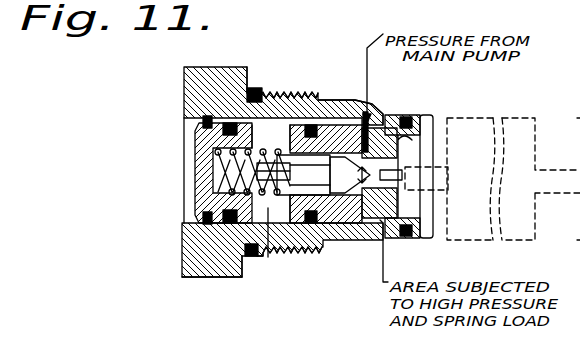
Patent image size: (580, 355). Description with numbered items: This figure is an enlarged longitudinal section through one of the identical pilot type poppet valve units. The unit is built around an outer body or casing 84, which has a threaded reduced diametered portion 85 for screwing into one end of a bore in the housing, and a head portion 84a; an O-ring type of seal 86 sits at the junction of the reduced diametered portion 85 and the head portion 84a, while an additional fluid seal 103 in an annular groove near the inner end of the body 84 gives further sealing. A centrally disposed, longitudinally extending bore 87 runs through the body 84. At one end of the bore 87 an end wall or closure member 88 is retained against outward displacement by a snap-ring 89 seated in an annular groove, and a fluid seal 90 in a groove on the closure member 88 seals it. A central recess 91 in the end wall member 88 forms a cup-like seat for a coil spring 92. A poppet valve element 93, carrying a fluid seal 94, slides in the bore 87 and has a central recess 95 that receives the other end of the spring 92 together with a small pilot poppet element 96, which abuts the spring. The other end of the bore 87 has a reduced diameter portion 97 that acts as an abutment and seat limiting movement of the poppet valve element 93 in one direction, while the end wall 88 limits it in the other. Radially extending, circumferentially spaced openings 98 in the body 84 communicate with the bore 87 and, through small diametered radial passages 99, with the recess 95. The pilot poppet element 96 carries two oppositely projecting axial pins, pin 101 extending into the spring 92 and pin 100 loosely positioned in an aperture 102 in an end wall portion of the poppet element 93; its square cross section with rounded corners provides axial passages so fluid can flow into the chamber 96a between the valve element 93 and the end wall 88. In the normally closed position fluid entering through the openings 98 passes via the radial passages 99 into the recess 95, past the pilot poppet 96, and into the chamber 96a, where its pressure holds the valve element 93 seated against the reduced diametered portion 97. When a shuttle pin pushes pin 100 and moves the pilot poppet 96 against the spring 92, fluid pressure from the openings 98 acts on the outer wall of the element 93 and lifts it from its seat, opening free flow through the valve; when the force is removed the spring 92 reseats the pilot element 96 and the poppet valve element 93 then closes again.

The outer body 84 is at (190, 88).
The head portion 84a is at (232, 56).
The reduced diametered portion 85 is at (290, 90).
The O-ring type of seal 86 is at (250, 88).
The bore 87 is at (198, 124).
The end wall or closure member 88 is at (200, 186).
The snap-ring 89 is at (183, 214).
The fluid seal 90 is at (226, 222).
The central recess 91 is at (217, 163).
The coil spring 92 is at (283, 232).
The poppet valve element 93 is at (343, 232).
The fluid seal 94 is at (317, 118).
The central recess 95 is at (360, 125).
The pilot poppet element 96 is at (323, 230).
The chamber 96a is at (258, 242).
The reduced diameter portion 97 is at (412, 150).
The openings 98 is at (368, 116).
The radial passages 99 is at (362, 172).
The pin 100 is at (402, 176).
The pin 101 is at (236, 226).
The aperture 102 is at (404, 190).
The fluid seal 103 is at (407, 117).